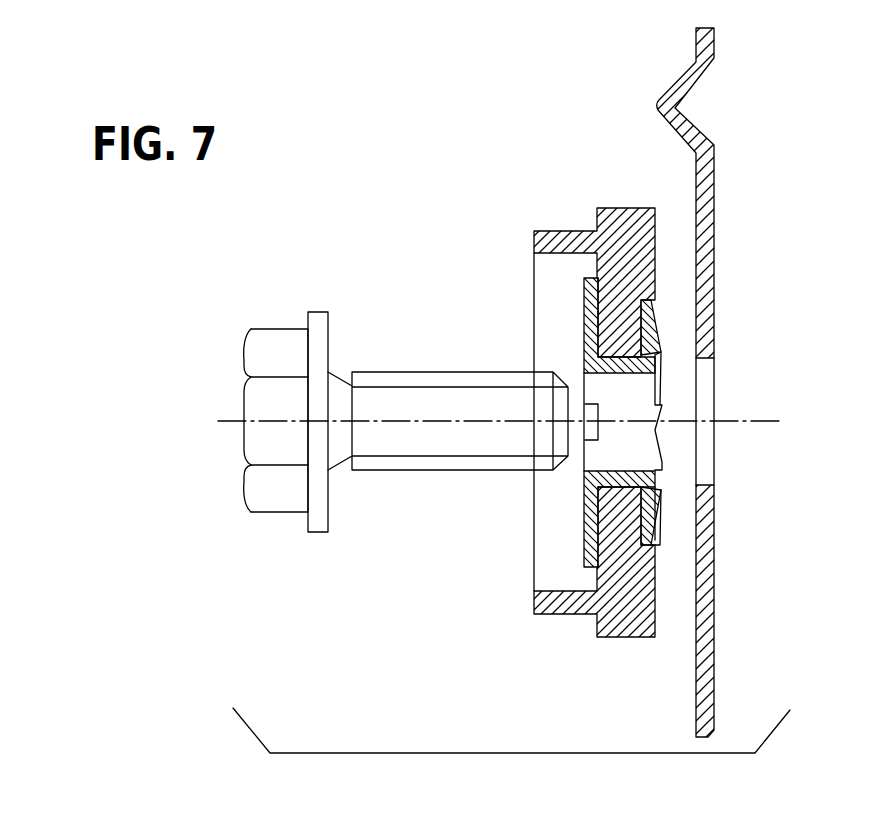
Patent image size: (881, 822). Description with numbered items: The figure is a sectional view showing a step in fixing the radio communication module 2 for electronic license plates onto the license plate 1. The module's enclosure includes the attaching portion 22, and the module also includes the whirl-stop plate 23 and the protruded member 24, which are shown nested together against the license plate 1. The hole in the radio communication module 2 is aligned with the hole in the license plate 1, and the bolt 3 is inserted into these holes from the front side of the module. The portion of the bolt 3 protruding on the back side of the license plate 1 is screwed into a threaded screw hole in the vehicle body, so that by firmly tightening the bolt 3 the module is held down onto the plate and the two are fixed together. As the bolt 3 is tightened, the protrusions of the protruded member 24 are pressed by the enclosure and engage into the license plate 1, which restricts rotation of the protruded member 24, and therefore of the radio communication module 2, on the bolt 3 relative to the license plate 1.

The license plate 1 is at (714, 43).
The radio communication module for electronic license plates 2 is at (625, 406).
The bolt 3 is at (270, 329).
The attaching portion 22 is at (641, 617).
The whirl-stop plate 23 is at (584, 280).
The protruded member 24 is at (656, 536).